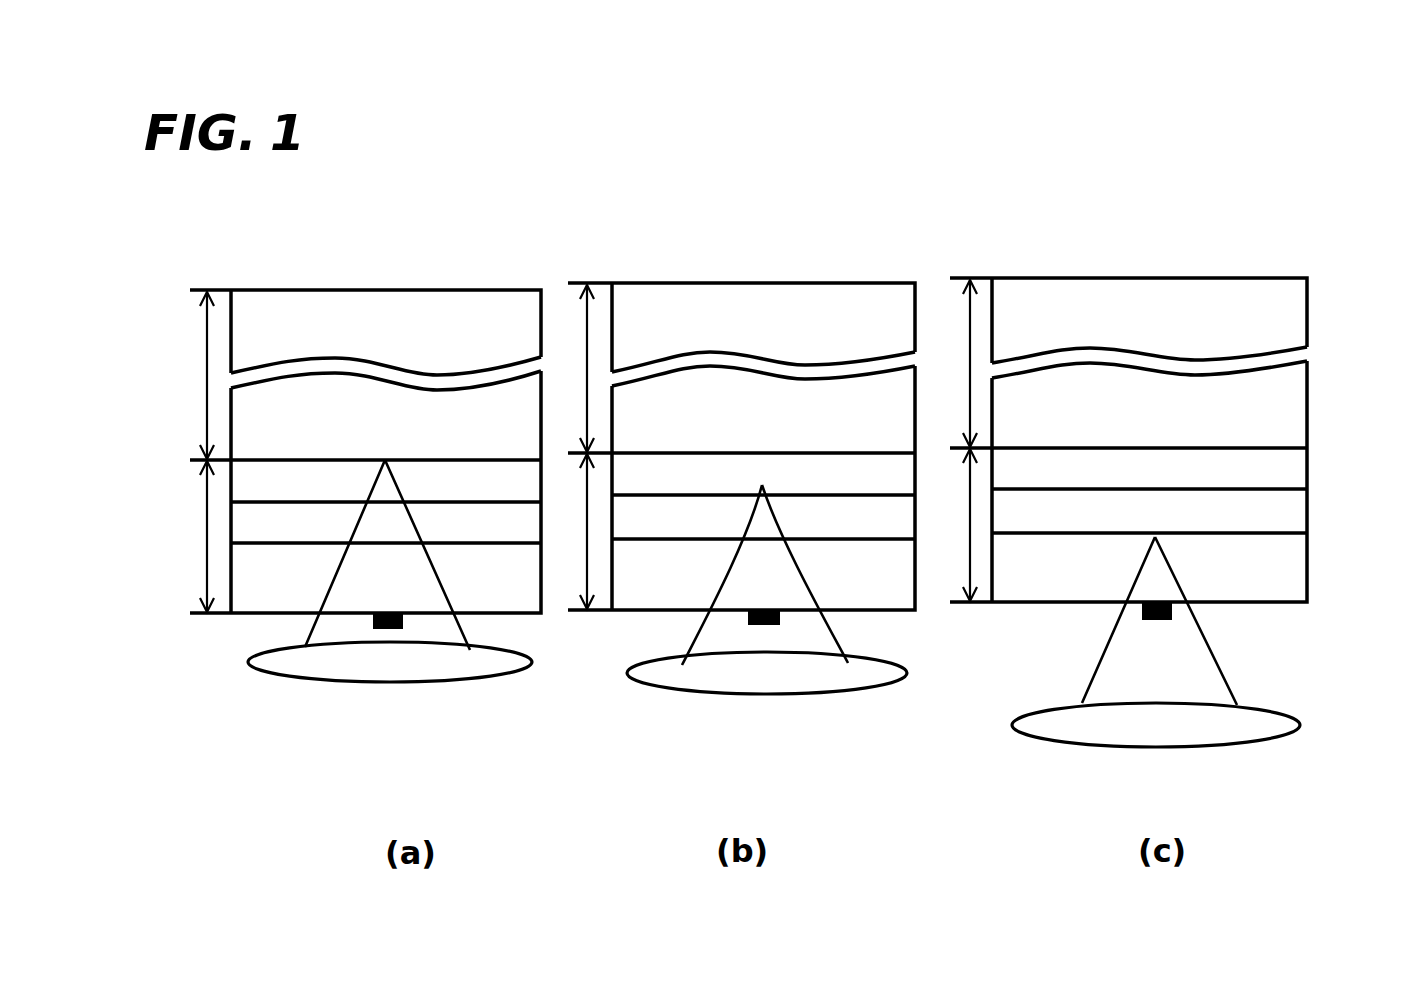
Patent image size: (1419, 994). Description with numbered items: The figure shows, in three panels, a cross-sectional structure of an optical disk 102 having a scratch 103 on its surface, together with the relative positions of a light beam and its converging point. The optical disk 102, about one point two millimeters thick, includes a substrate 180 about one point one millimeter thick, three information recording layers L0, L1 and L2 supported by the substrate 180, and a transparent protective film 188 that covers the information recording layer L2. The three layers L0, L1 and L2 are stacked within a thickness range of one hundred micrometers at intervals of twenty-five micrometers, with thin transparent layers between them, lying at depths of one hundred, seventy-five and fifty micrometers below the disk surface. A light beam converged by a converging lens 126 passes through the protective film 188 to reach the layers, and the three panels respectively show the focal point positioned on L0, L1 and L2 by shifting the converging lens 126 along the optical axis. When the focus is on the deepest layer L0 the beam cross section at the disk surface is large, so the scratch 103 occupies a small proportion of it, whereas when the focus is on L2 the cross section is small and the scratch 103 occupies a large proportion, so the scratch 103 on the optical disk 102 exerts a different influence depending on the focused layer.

The optical disk 102 is at (427, 240).
The scratch 103 is at (392, 637).
The converging lens 126 is at (488, 695).
The substrate 180 is at (1277, 402).
The information recording layer L0 is at (1278, 446).
The information recording layer L1 is at (1278, 486).
The information recording layer L2 is at (1278, 531).
The protective film 188 is at (1278, 572).